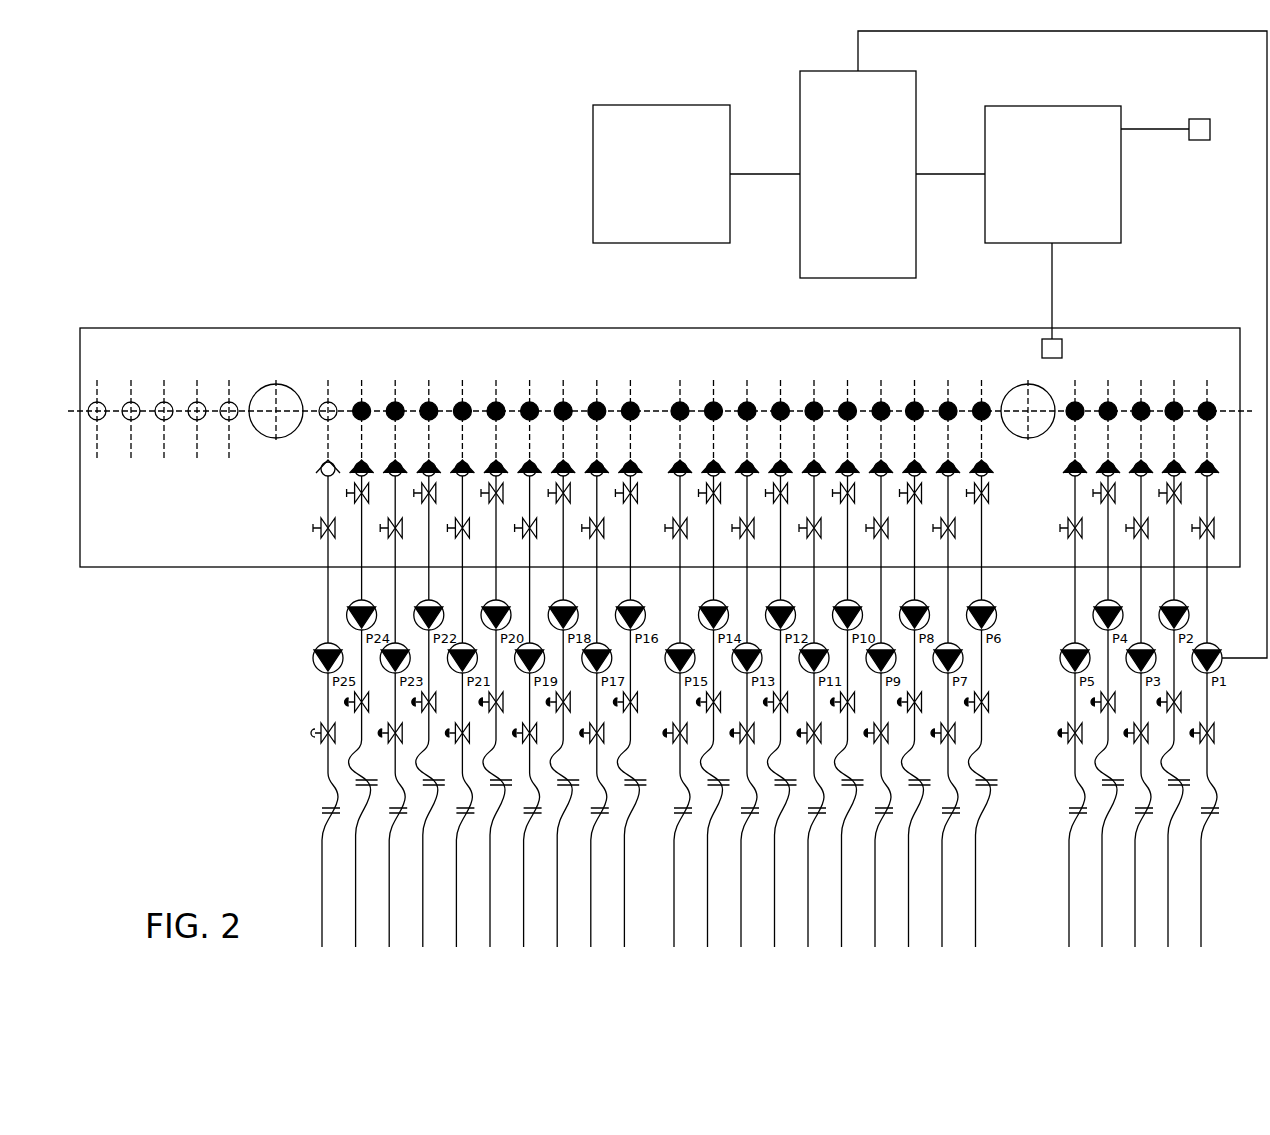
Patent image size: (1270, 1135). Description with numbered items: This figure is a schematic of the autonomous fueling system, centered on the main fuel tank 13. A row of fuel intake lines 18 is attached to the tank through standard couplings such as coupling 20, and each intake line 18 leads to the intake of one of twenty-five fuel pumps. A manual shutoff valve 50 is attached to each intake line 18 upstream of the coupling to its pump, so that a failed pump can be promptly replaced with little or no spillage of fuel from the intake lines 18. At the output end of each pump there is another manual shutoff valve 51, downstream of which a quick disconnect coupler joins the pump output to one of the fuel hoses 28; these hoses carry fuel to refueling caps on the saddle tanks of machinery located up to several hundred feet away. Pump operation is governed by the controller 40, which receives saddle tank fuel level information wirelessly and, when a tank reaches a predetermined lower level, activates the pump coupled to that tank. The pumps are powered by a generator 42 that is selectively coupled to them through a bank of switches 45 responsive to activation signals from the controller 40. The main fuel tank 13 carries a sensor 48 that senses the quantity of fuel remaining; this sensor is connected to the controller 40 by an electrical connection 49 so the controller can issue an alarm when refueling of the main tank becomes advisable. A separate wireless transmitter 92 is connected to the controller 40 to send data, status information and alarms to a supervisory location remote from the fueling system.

The main fuel tank 13 is at (152, 567).
The fuel intake lines 18 is at (328, 610).
The coupling 20 is at (132, 417).
The fuel hoses 28 is at (322, 893).
The controller 40 is at (1121, 207).
The generator 42 is at (650, 105).
The bank of switches 45 is at (916, 262).
The sensor 48 is at (1062, 350).
The electrical connection 49 is at (1052, 293).
The shutoff valve 50 is at (313, 529).
The shutoff valve 51 is at (311, 737).
The wireless transmitter 92 is at (1200, 140).